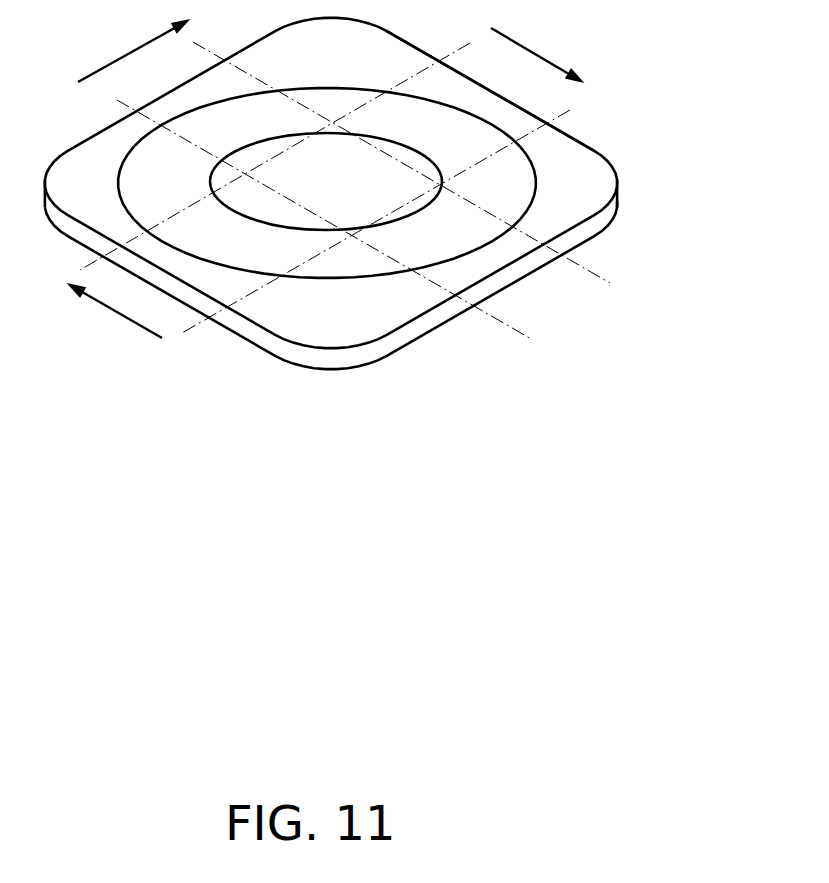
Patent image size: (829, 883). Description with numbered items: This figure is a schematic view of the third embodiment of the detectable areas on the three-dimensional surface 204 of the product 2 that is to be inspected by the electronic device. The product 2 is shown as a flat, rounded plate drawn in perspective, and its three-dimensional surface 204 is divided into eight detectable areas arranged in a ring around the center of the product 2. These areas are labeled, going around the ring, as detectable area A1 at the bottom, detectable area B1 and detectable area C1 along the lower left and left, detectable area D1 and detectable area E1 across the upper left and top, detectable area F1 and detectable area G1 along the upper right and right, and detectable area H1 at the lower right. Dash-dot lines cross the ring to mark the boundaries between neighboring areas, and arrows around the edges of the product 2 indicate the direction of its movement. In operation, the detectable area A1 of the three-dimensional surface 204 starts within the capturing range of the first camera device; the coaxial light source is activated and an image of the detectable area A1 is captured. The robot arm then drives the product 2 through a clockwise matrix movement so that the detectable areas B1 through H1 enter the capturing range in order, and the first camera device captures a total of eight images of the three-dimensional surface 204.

The product 2 is at (549, 309).
The 3D surface 204 is at (590, 161).
The detectable area A1 is at (327, 289).
The detectable area B1 is at (202, 244).
The detectable area C1 is at (142, 183).
The detectable area D1 is at (198, 120).
The detectable area E1 is at (327, 71).
The detectable area F1 is at (463, 120).
The detectable area G1 is at (551, 183).
The detectable area H1 is at (463, 244).